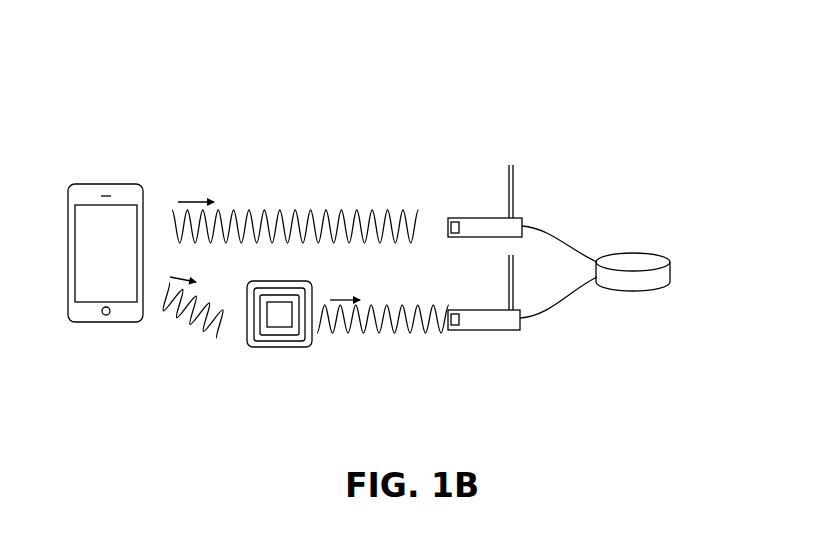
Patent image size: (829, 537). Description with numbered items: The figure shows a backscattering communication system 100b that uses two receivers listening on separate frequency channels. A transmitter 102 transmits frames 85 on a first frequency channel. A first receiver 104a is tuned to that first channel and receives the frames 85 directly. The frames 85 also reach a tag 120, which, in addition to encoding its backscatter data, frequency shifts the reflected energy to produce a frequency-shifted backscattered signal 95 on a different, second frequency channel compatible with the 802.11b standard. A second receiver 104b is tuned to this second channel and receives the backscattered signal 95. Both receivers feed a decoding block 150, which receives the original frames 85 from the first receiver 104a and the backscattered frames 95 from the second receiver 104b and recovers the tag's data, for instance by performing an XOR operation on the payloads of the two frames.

The backscattering communication system 100b is at (126, 60).
The transmitter 102 is at (104, 182).
The frames 85 is at (294, 208).
The tag 120 is at (277, 349).
The backscattered signal 95 is at (355, 334).
The receiver 104a is at (484, 216).
The second receiver 104b is at (485, 331).
The decoding block 150 is at (672, 270).